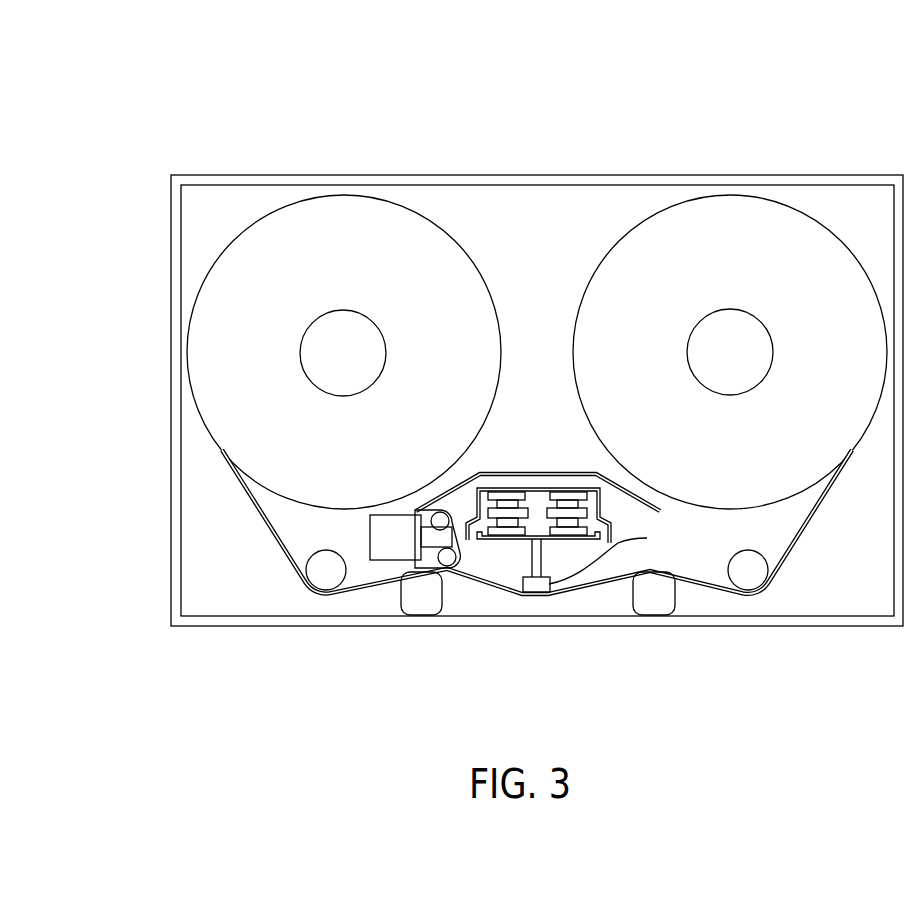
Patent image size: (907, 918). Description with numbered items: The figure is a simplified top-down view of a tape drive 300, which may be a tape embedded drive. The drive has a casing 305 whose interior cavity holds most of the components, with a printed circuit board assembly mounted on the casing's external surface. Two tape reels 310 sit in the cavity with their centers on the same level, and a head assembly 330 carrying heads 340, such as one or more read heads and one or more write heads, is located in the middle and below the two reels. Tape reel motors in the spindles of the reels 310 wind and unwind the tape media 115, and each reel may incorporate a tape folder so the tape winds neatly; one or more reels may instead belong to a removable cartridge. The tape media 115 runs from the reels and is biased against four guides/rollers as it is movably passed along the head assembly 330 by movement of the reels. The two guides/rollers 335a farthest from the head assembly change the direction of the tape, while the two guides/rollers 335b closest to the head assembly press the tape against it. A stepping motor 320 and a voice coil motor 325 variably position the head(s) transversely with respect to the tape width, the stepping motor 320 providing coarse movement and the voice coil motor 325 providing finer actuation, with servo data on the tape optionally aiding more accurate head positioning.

The tape drive 300 is at (165, 100).
The casing 305 is at (563, 175).
The tape reel 310 is at (327, 195).
The magnetic tape 115 is at (268, 533).
The stepping motor 320 is at (373, 563).
The voice coil motor 325 is at (513, 542).
The head assembly 330 is at (537, 594).
The guide/roller 335a is at (325, 574).
The guide/roller 335b is at (421, 598).
The head 340 is at (618, 556).